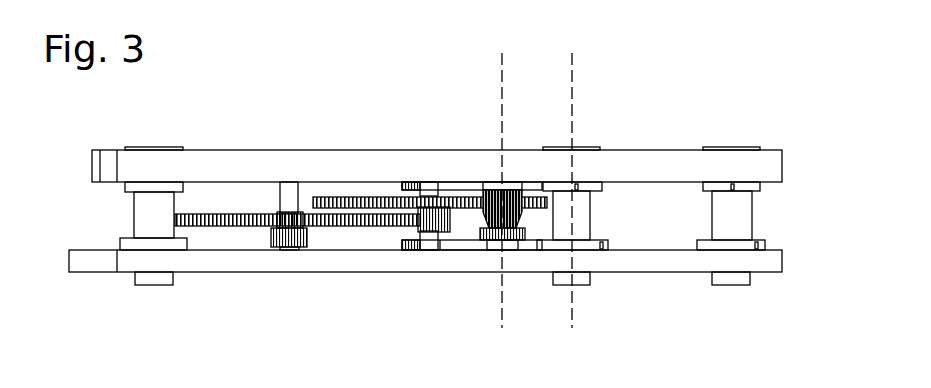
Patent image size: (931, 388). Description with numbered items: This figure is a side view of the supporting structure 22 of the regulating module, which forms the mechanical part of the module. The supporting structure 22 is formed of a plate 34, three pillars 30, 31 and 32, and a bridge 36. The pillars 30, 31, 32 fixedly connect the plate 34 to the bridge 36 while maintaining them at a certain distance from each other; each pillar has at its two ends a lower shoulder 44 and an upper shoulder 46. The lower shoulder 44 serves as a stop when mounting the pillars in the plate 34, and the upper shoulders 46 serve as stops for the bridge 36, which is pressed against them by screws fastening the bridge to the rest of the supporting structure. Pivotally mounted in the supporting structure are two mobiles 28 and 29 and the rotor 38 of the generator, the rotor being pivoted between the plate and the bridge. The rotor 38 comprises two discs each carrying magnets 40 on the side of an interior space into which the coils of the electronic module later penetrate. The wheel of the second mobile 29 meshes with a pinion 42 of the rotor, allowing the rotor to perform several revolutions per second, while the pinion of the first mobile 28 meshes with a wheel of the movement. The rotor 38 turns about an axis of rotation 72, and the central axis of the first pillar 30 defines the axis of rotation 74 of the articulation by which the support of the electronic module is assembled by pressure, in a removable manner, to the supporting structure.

The supporting structure 22 is at (665, 283).
The first mobile 28 is at (215, 222).
The second mobile 29 is at (330, 198).
The first pillar 30 is at (587, 232).
The pillar 31 is at (155, 215).
The pillar 32 is at (733, 215).
The plate 34 is at (337, 260).
The bridge 36 is at (232, 172).
The rotor 38 is at (468, 252).
The magnets 40 is at (448, 185).
The pinion 42 is at (529, 228).
The lower shoulder 44 is at (603, 249).
The upper shoulder 46 is at (583, 186).
The axis of rotation 72 is at (502, 84).
The axis of rotation 74 is at (572, 84).